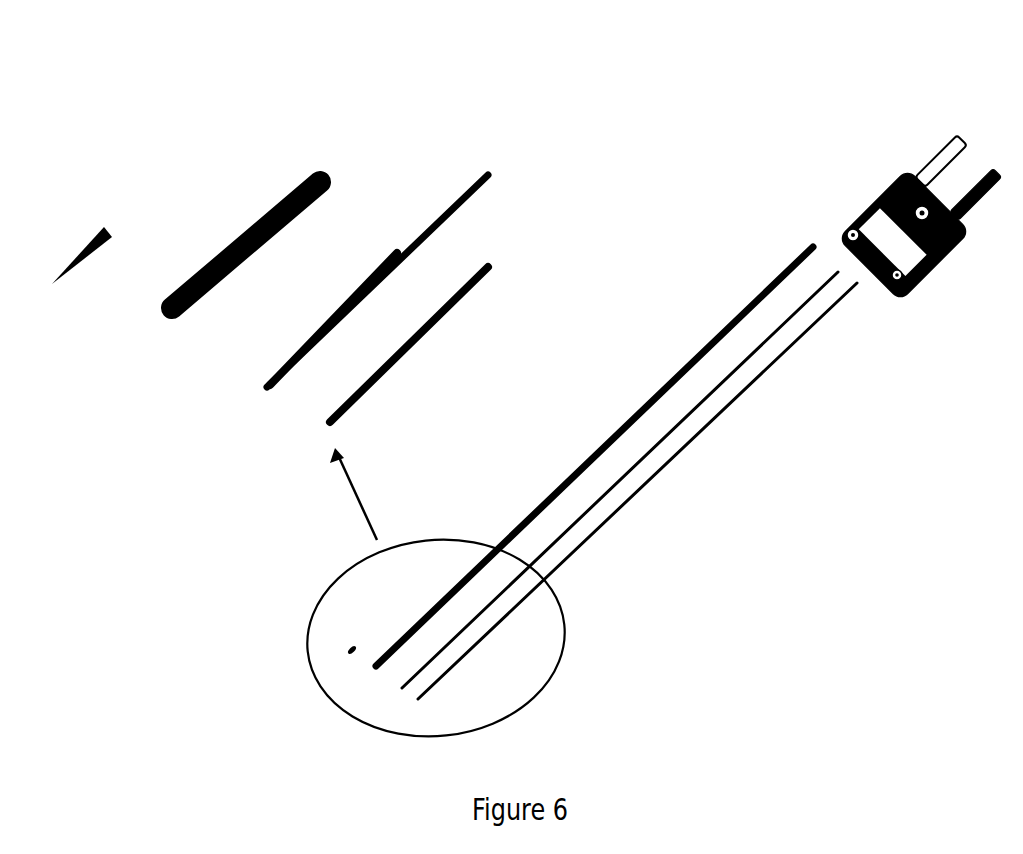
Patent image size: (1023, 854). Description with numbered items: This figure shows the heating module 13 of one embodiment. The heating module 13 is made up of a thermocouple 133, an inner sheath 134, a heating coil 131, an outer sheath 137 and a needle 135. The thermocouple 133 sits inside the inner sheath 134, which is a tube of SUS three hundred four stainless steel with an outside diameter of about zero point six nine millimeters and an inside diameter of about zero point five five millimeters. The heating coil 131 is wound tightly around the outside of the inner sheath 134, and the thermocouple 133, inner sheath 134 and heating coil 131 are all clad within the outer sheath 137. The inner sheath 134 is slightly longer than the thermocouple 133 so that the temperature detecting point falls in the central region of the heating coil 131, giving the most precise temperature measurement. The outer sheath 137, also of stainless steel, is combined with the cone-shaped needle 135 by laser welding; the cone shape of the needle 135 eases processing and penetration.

The heating module 13 is at (747, 183).
The heating coil 131 is at (285, 323).
The thermocouple 133 is at (436, 317).
The inner sheath 134 is at (377, 249).
The needle 135 is at (94, 228).
The outer sheath 137 is at (246, 221).